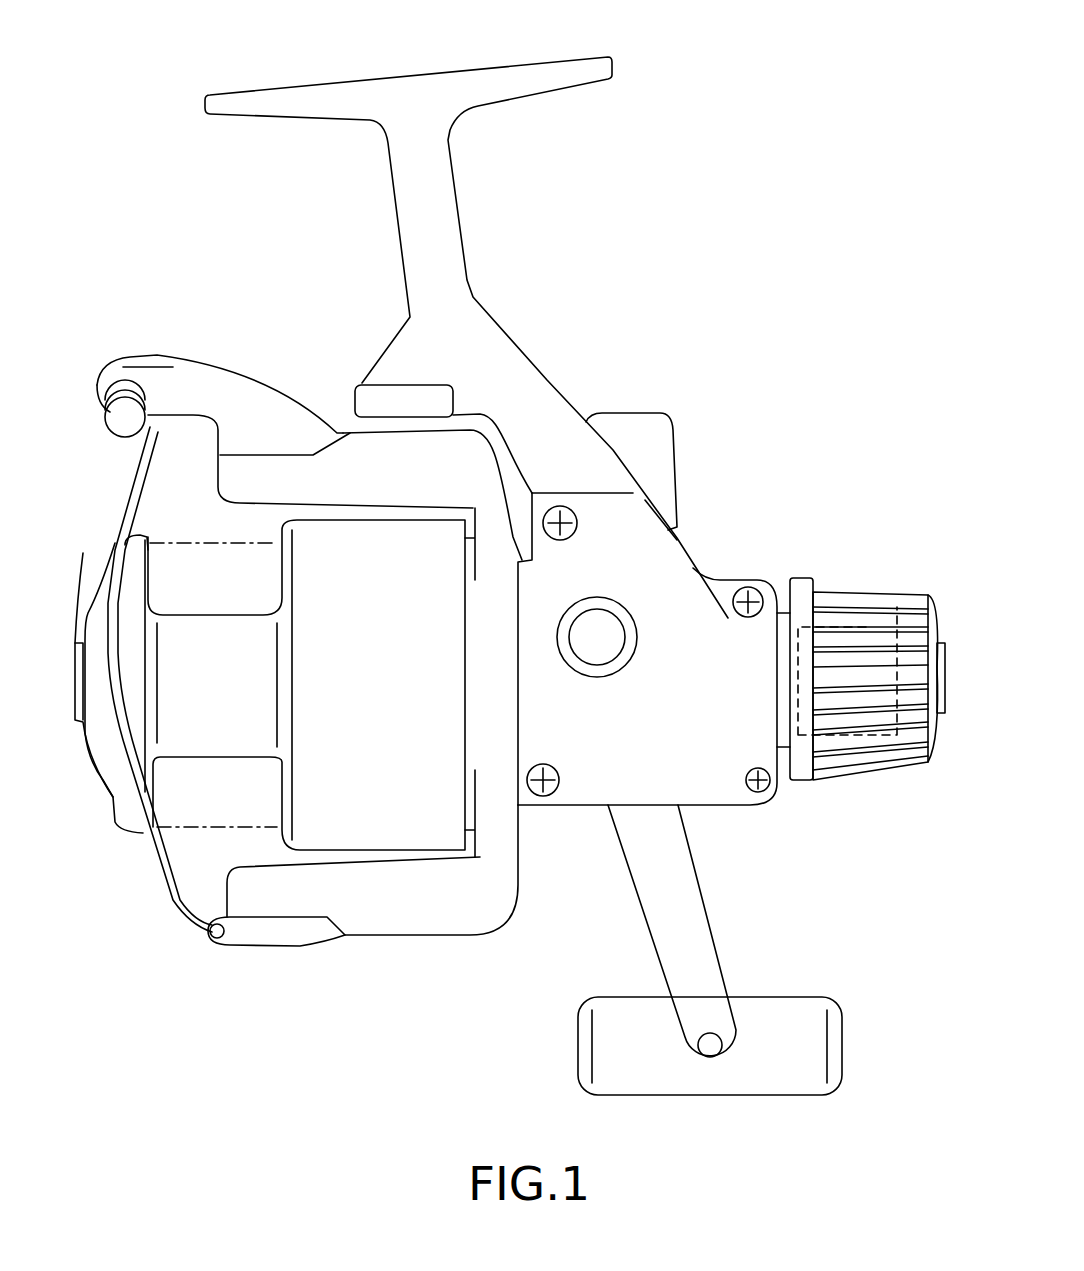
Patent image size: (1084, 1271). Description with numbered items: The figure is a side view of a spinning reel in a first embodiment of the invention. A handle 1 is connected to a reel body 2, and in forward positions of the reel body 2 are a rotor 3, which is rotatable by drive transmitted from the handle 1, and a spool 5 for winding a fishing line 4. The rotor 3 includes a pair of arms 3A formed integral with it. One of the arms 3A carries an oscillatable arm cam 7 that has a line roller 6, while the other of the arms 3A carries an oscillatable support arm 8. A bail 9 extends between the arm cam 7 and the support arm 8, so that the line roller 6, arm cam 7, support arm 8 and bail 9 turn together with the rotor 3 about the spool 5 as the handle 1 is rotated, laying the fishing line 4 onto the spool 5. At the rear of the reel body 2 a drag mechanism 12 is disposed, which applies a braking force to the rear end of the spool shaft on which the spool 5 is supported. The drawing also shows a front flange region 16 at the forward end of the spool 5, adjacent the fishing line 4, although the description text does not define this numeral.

The handle 1 is at (690, 943).
The reel body 2 is at (670, 570).
The rotor 3 is at (510, 858).
The arms 3A is at (353, 437).
The fishing line 4 is at (240, 830).
The spool 5 is at (250, 682).
The line roller 6 is at (125, 387).
The arm cam 7 is at (207, 380).
The support arm 8 is at (280, 942).
The bail 9 is at (153, 860).
The drag mechanism 12 is at (902, 640).
The spool skirt 16 is at (83, 553).